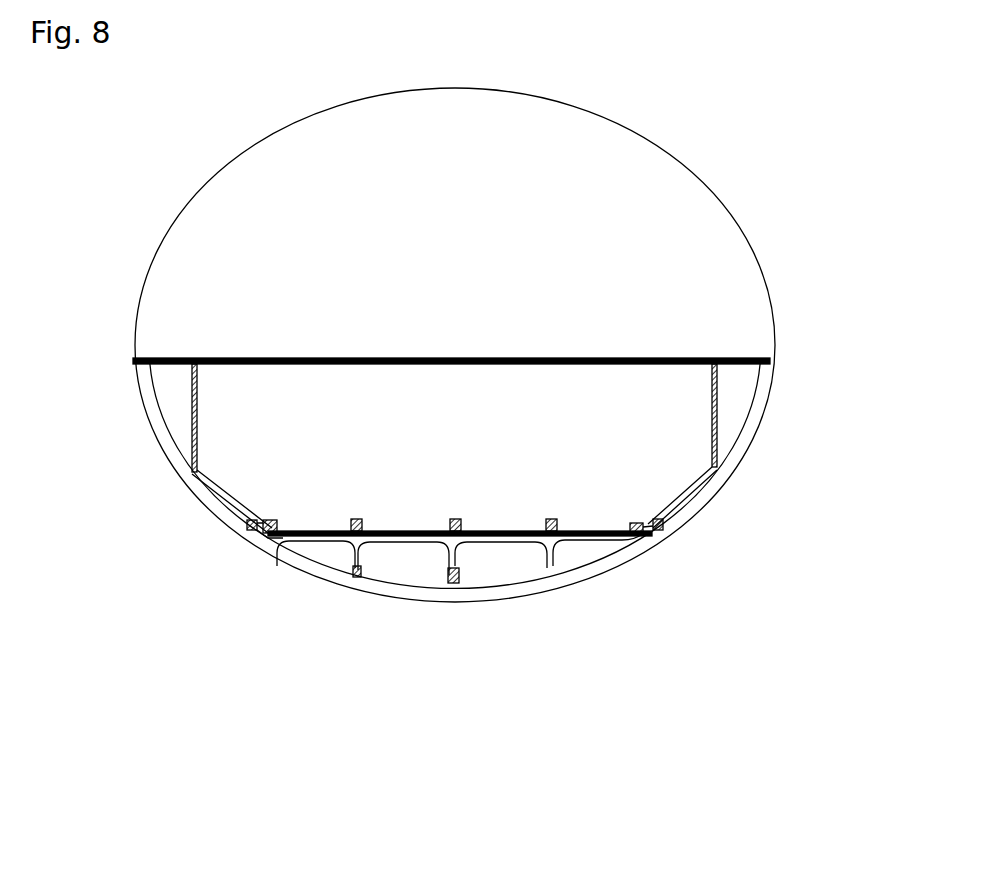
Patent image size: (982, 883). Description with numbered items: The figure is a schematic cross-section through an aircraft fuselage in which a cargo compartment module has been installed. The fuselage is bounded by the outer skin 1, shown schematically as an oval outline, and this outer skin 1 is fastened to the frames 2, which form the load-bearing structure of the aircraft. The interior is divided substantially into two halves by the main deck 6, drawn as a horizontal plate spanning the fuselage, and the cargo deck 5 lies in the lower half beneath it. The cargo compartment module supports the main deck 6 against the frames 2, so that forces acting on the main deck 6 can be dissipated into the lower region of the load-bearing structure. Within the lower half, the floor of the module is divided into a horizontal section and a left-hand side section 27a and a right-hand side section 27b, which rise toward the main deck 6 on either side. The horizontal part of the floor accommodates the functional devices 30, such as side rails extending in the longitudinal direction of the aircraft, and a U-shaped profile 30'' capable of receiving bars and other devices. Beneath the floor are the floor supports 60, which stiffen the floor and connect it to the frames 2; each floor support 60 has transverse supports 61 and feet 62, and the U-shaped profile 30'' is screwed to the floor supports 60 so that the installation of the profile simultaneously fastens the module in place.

The outer skin 1 is at (686, 348).
The frames 2 is at (164, 440).
The cargo deck 5 is at (300, 527).
The main deck 6 is at (769, 358).
The side section 27a is at (187, 431).
The side section 27b is at (720, 420).
The functional devices 30 is at (198, 608).
The U-shaped profile 30'' is at (454, 630).
The floor support 60 is at (548, 542).
The transverse support 61 is at (455, 578).
The foot 62 is at (357, 572).